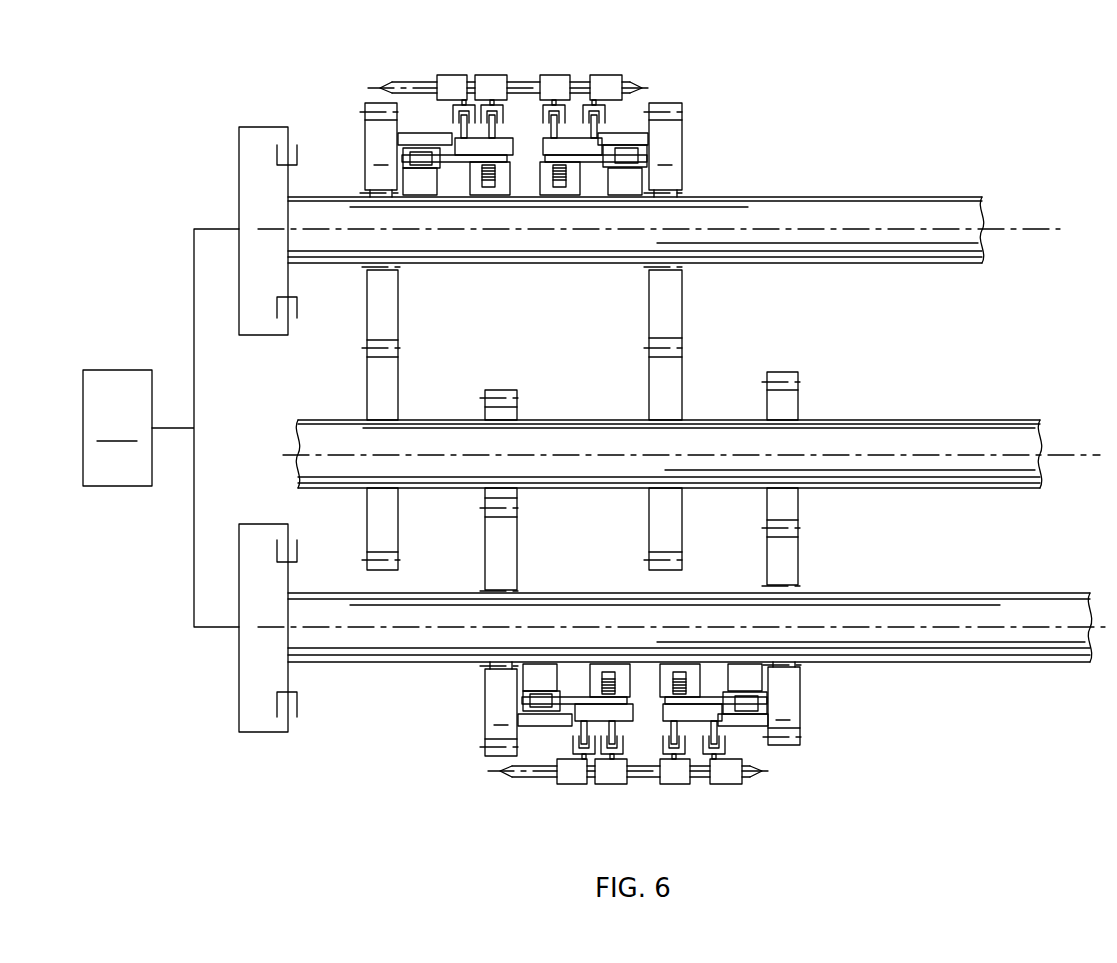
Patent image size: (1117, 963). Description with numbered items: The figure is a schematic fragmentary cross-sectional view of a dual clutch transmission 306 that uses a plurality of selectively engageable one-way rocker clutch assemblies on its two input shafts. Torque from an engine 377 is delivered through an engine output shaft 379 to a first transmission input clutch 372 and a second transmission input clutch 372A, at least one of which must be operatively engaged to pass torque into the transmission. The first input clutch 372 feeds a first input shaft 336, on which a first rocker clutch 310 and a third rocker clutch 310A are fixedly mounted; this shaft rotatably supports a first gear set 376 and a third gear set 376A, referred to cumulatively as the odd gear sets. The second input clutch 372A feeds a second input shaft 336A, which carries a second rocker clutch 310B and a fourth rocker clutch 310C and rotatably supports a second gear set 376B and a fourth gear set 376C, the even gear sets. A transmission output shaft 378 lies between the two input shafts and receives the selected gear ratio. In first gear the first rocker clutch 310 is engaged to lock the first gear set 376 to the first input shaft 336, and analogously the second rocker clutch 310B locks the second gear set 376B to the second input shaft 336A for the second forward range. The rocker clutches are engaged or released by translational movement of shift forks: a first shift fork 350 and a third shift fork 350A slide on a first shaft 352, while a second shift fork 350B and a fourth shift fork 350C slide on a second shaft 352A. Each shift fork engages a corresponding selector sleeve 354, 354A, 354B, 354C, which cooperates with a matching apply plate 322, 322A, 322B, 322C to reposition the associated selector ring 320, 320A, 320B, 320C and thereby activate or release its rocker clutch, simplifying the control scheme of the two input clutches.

The dual clutch transmission 306 is at (822, 98).
The first one-way rocker clutch 310 is at (425, 128).
The third one-way rocker clutch 310A is at (627, 128).
The second one-way rocker clutch 310B is at (538, 733).
The fourth one-way rocker clutch 310C is at (748, 733).
The selector ring 320 is at (443, 158).
The selector ring 320A is at (605, 160).
The selector ring 320B is at (562, 698).
The selector ring 320C is at (748, 666).
The apply plate 322 is at (444, 160).
The apply plate 322A is at (612, 160).
The apply plate 322B is at (582, 700).
The apply plate 322C is at (733, 700).
The first input shaft 336 is at (823, 197).
The second input shaft 336A is at (910, 593).
The first shift fork 350 is at (482, 62).
The third shift fork 350A is at (573, 68).
The second shift fork 350B is at (605, 800).
The fourth shift fork 350C is at (694, 792).
The first shaft 352 is at (522, 82).
The second shaft 352A is at (638, 784).
The selector sleeve 354 is at (508, 146).
The selector sleeve 354A is at (560, 144).
The selector sleeve 354B is at (626, 712).
The selector sleeve 354C is at (676, 712).
The first transmission input clutch 372 is at (265, 117).
The second transmission input clutch 372A is at (265, 515).
The first gear set 376 is at (365, 152).
The third gear set 376A is at (683, 152).
The second gear set 376B is at (485, 684).
The fourth gear set 376C is at (801, 721).
The engine 377 is at (117, 428).
The transmission output shaft 378 is at (845, 420).
The engine output shaft 379 is at (172, 428).